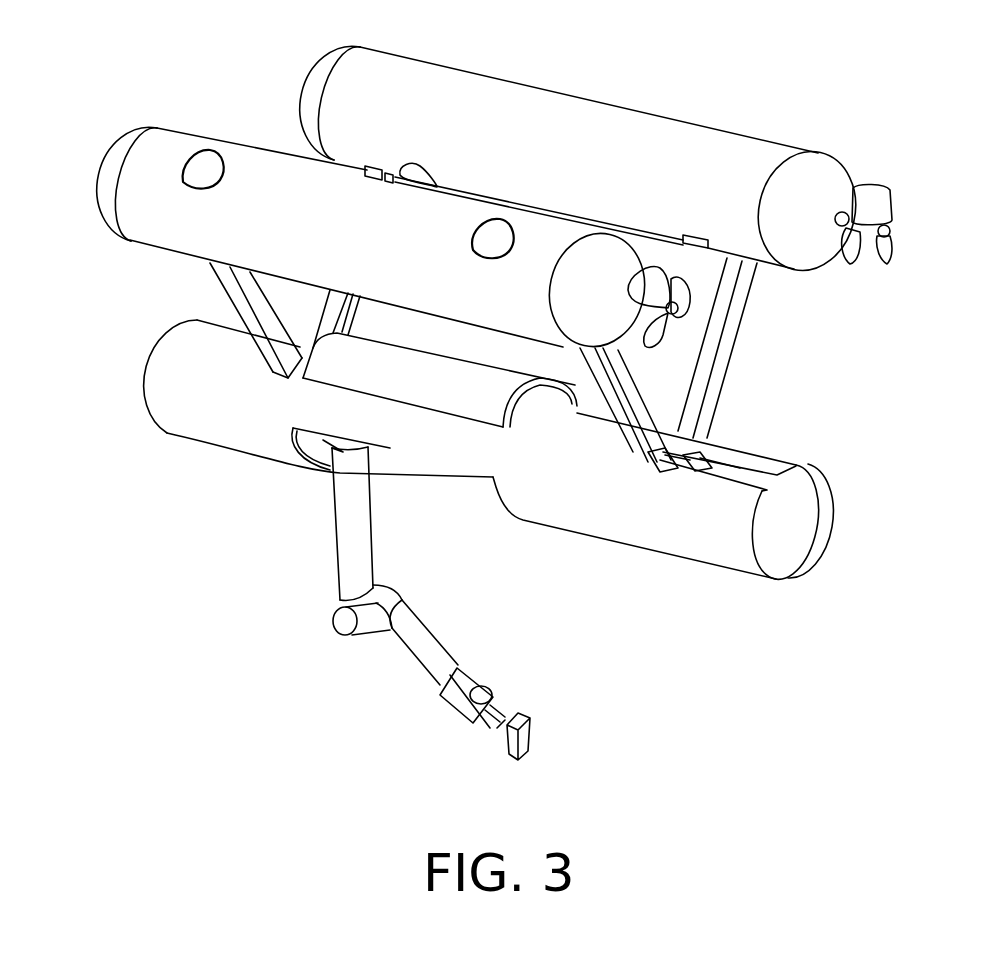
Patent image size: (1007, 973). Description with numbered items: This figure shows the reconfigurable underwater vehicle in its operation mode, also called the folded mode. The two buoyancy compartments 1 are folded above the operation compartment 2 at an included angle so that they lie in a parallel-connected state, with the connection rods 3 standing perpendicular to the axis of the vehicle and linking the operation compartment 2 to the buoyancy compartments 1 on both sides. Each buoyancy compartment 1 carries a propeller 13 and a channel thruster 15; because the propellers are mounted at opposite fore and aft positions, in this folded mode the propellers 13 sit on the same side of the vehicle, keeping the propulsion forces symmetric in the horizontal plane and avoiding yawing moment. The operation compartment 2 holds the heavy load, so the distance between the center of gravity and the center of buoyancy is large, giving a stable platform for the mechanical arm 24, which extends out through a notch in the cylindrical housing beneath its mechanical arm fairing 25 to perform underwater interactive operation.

The buoyancy compartment 1 is at (277, 200).
The operation compartment 2 is at (582, 495).
The connection rods 3 is at (713, 340).
The propeller 13 is at (873, 203).
The channel thruster 15 is at (198, 170).
The mechanical arm 24 is at (343, 510).
The mechanical arm fairing 25 is at (447, 373).